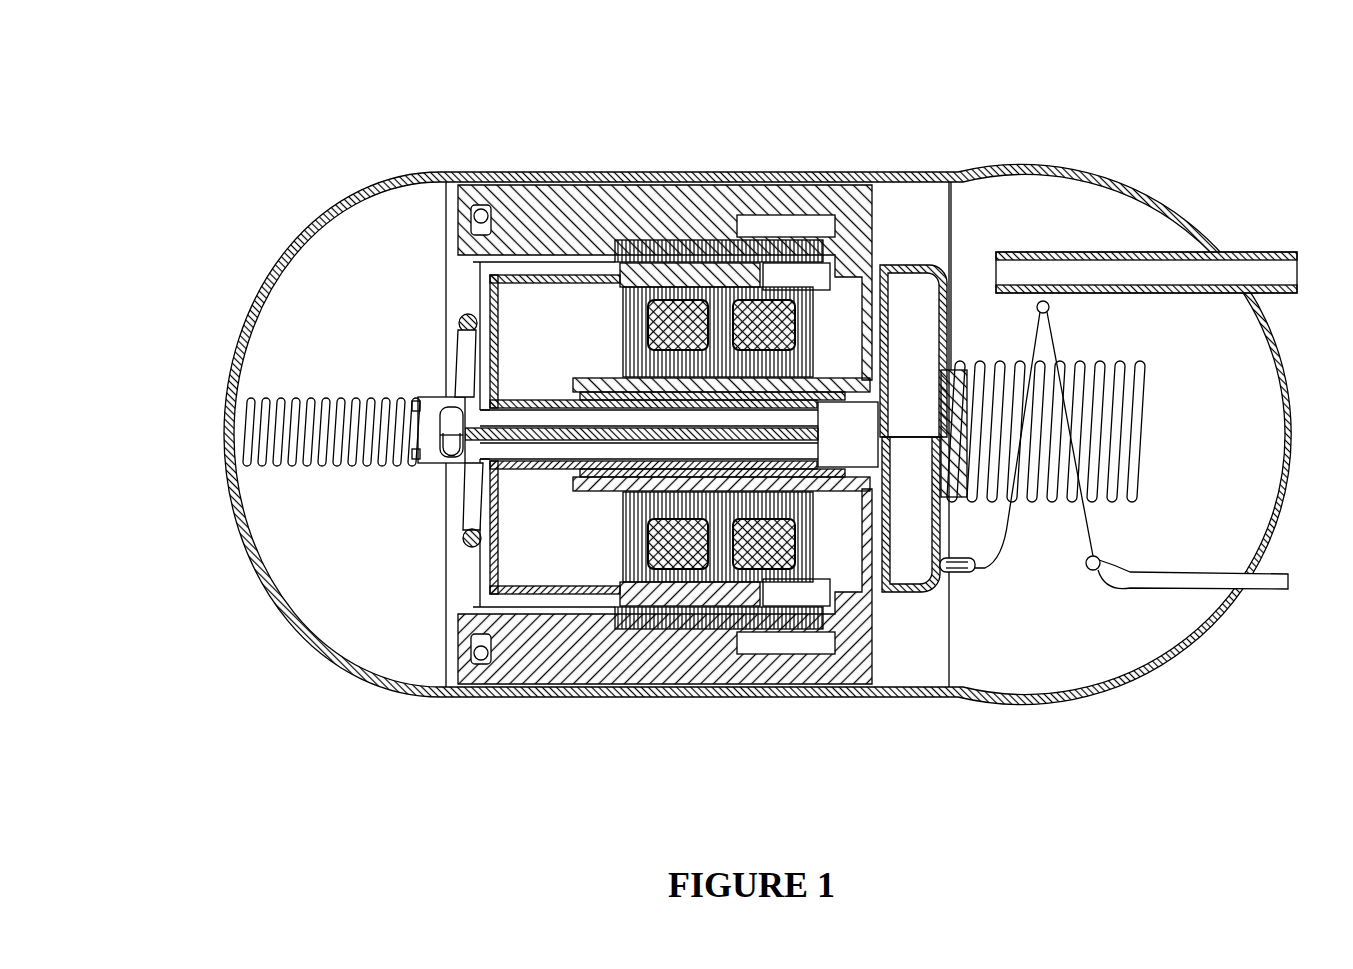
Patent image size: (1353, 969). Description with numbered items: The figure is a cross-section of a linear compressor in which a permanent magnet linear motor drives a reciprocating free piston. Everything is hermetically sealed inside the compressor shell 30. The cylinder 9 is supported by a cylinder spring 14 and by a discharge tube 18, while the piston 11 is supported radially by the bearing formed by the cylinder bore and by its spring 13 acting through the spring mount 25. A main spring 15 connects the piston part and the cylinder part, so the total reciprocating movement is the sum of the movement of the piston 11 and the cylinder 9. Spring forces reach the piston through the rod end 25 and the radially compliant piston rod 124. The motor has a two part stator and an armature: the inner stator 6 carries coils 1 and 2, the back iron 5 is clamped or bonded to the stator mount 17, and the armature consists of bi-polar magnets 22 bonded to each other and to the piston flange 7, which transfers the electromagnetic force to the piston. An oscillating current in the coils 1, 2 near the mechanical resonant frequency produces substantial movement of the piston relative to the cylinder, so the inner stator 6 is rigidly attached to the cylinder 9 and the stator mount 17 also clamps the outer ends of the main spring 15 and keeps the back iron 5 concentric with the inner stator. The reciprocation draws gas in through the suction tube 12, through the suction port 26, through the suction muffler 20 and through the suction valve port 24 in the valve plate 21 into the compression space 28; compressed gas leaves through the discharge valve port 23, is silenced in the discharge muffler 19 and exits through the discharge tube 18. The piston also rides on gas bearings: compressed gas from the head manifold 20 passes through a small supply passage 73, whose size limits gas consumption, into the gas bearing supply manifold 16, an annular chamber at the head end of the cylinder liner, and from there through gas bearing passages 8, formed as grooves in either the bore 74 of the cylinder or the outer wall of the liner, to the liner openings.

The coil 1 is at (719, 358).
The coil 2 is at (766, 300).
The back iron 5 is at (626, 310).
The inner stator 6 is at (486, 178).
The piston flange 7 is at (476, 600).
The gas bearing passages 8 is at (868, 378).
The cylinder 9 is at (836, 372).
The piston 11 is at (478, 505).
The suction tube 12 is at (1178, 252).
The spring 13 is at (325, 462).
The cylinder spring 14 is at (1030, 507).
The main spring 15 is at (460, 318).
The gas bearing supply manifold 16 is at (886, 495).
The stator mount 17 is at (548, 186).
The discharge tube 18 is at (993, 568).
The discharge muffler 19 is at (920, 573).
The suction muffler 20 is at (917, 352).
The valve plate 21 is at (887, 593).
The bi-polar magnets 22 is at (632, 592).
The discharge valve port 23 is at (888, 453).
The suction valve port 24 is at (890, 407).
The spring mount 25 is at (433, 398).
The suction port 26 is at (946, 330).
The compression space 28 is at (833, 457).
The compressor shell 30 is at (949, 240).
The supply passage 73 is at (893, 300).
The bore of the cylinder 74 is at (697, 573).
The piston rod 124 is at (523, 427).